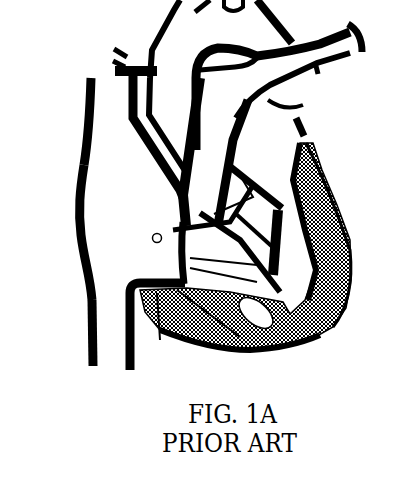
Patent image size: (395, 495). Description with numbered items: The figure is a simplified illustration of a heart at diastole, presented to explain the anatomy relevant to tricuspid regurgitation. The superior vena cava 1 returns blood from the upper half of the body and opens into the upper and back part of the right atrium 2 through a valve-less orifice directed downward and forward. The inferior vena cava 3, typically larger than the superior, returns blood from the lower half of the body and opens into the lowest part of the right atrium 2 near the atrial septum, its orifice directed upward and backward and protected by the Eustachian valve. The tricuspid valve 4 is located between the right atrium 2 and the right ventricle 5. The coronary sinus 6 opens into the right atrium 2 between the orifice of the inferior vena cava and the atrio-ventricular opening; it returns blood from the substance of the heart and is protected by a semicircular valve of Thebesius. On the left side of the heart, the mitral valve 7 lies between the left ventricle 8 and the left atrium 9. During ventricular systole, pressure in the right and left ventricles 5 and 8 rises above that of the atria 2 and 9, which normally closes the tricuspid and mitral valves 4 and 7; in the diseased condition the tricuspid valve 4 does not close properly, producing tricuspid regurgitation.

The superior vena cava 1 is at (110, 105).
The right atrium 2 is at (123, 243).
The inferior vena cava 3 is at (107, 333).
The tricuspid valve 4 is at (161, 338).
The right ventricle 5 is at (287, 340).
The coronary sinus 6 is at (152, 237).
The mitral valve 7 is at (288, 200).
The left ventricle 8 is at (305, 283).
The left atrium 9 is at (267, 153).